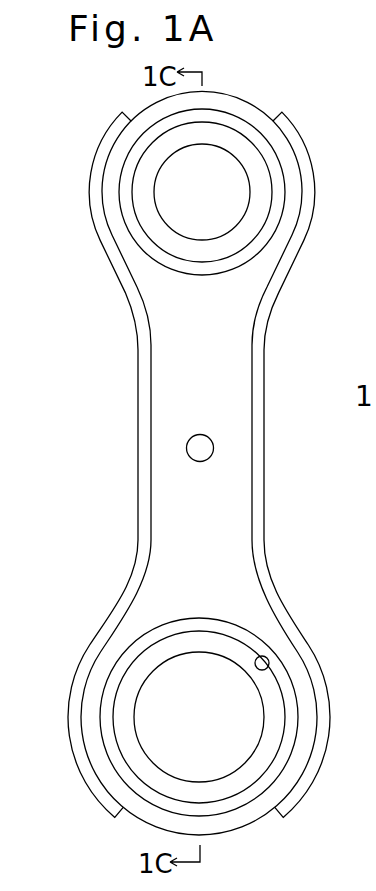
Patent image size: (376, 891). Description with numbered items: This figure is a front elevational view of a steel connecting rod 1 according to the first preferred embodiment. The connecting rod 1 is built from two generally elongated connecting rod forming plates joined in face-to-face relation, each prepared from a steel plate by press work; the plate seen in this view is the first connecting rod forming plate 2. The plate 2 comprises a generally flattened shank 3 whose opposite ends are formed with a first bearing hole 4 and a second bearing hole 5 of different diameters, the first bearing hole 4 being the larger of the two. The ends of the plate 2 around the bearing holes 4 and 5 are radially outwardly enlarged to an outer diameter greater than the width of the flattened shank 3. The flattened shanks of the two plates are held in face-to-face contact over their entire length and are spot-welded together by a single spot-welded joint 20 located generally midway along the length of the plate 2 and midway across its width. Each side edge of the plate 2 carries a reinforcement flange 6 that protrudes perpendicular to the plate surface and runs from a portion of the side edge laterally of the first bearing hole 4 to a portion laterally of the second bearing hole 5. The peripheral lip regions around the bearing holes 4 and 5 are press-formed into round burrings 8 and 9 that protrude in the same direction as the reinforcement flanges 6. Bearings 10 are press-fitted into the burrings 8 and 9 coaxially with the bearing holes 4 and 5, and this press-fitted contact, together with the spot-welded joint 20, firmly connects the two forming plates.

The steel connecting rod 1 is at (186, 463).
The first connecting rod forming plate 2 is at (124, 400).
The flattened shank 3 is at (255, 425).
The first bearing hole 4 is at (225, 255).
The second bearing hole 5 is at (268, 670).
The reinforcement flange 6 is at (143, 487).
The round burring 8 is at (272, 192).
The round burring 9 is at (290, 742).
The bearing 10 is at (255, 160).
The spot-welded joint 20 is at (204, 446).